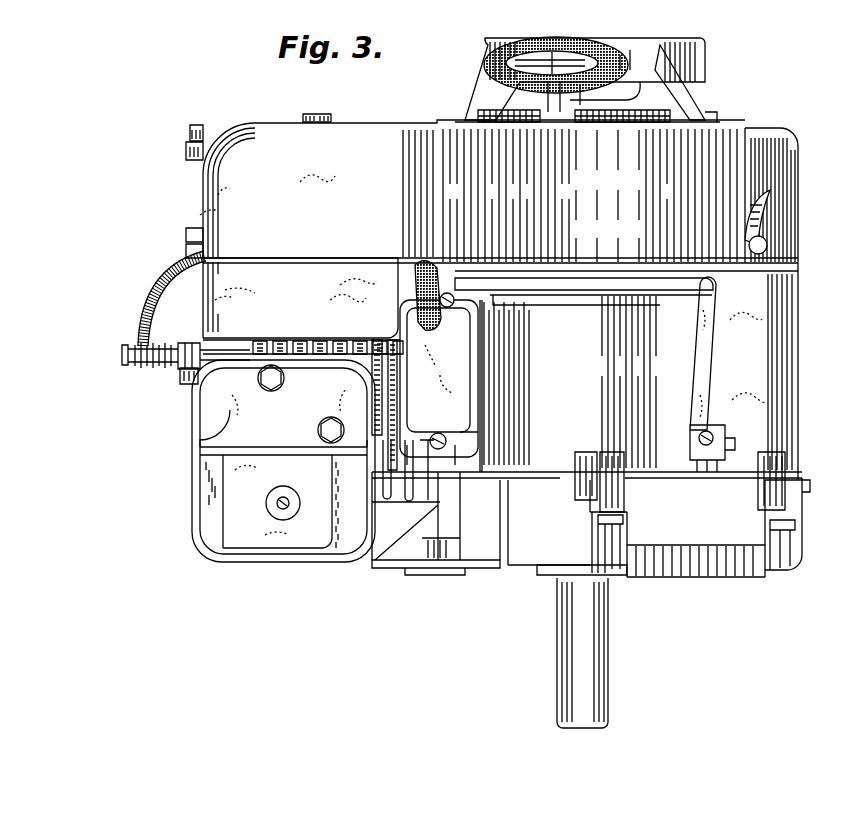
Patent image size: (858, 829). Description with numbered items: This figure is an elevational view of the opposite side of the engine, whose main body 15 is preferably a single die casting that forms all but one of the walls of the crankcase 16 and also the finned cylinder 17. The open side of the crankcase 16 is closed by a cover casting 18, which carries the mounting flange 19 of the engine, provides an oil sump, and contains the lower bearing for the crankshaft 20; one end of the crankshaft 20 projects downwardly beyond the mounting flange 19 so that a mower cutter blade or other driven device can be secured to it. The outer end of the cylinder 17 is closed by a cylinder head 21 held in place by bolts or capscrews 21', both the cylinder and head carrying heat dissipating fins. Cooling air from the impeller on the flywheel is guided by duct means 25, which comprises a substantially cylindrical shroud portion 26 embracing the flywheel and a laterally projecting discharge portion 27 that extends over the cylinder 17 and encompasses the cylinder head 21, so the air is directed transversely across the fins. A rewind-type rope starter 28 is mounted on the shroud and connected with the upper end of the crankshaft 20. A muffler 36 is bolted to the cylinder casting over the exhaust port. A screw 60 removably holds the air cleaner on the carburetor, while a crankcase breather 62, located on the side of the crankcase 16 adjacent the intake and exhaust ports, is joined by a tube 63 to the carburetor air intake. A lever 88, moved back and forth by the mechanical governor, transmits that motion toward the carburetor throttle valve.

The main body of the engine 15 is at (121, 418).
The crankcase 16 is at (790, 378).
The finned cylinder 17 is at (312, 343).
The cover casting 18 is at (706, 572).
The mounting flange 19 is at (398, 573).
The crankshaft 20 is at (568, 638).
The cylinder head 21 is at (186, 340).
The bolts or capscrews 21' is at (155, 327).
The duct means 25 is at (172, 195).
The shroud portion 26 is at (792, 160).
The discharge portion 27 is at (220, 176).
The rewind-type rope starter 28 is at (466, 60).
The muffler 36 is at (222, 418).
The screw 60 is at (322, 113).
The crankcase breather 62 is at (438, 398).
The tube 63 is at (412, 300).
The lever 88 is at (470, 282).